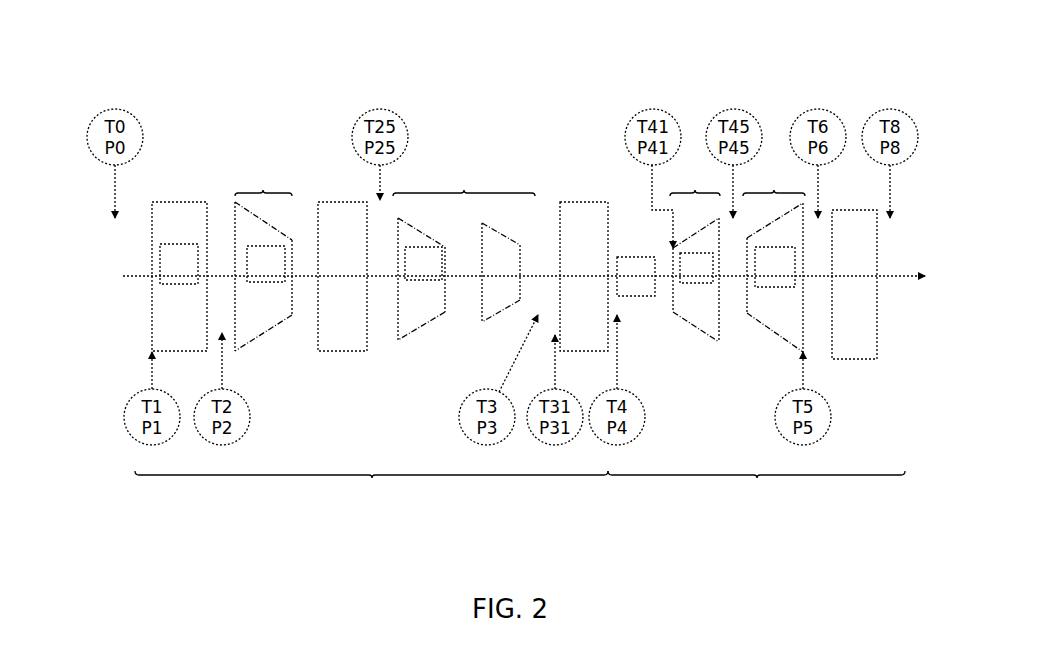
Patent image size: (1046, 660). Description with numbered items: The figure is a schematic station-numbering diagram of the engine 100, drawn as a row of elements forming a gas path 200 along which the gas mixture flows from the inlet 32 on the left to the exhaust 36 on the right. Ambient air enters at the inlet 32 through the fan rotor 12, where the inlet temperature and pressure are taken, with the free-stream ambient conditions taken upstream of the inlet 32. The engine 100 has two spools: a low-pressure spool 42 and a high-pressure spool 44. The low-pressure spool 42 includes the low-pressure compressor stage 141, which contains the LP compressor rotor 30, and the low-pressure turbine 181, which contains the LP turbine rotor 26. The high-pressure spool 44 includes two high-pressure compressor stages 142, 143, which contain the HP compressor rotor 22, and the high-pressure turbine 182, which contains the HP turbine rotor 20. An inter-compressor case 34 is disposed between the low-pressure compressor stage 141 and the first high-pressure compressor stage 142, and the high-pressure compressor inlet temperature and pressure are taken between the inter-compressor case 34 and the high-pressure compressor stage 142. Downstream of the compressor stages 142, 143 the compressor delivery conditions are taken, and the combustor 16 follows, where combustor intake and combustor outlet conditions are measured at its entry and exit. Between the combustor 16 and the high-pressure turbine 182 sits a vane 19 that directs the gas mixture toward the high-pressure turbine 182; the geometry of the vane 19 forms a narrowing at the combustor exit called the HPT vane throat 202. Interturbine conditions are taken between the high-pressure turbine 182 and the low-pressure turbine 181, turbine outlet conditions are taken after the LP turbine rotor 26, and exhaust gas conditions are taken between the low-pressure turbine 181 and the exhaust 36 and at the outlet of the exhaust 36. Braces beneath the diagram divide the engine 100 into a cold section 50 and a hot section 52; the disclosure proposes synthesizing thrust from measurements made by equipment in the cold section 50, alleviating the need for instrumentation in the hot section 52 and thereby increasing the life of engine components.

The engine 100 is at (121, 65).
The gas path 200 is at (927, 260).
The high-pressure turbine vane throat 202 is at (633, 247).
The fan rotor 12 is at (168, 275).
The inlet 32 is at (168, 335).
The low-pressure compressor stage 141 is at (271, 311).
The first high-pressure compressor stage 142 is at (426, 309).
The second high-pressure compressor stage 143 is at (513, 292).
The LP compressor rotor 30 is at (255, 275).
The inter-compressor case 34 is at (331, 285).
The HP compressor rotor 22 is at (413, 274).
The combustor 16 is at (573, 285).
The vane 19 is at (625, 287).
The low-pressure turbine 181 is at (796, 315).
The high-pressure turbine 182 is at (711, 309).
The HP turbine rotor 20 is at (687, 277).
The LP turbine rotor 26 is at (764, 276).
The exhaust 36 is at (844, 294).
The low-pressure spool 42 is at (520, 180).
The high-pressure spool 44 is at (556, 180).
The cold section 50 is at (371, 491).
The hot section 52 is at (756, 491).